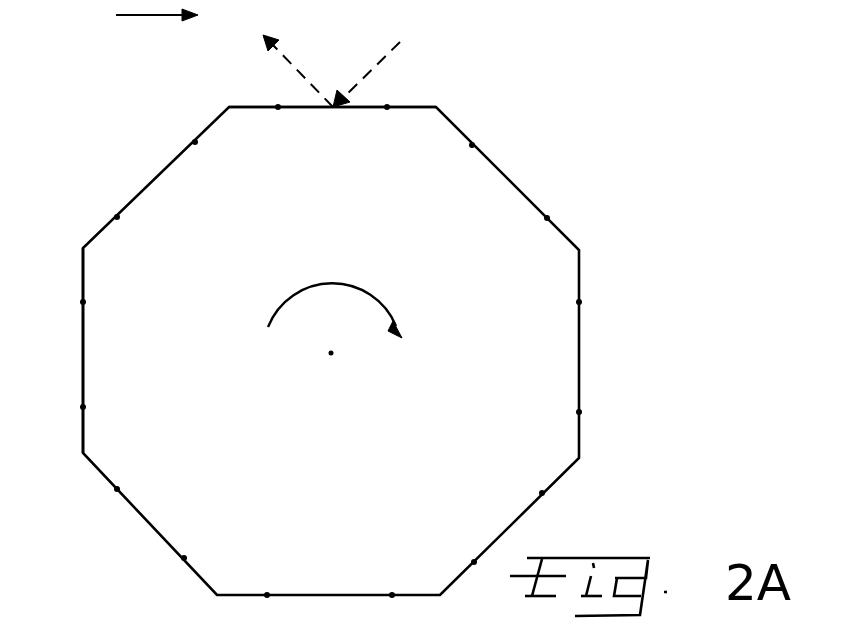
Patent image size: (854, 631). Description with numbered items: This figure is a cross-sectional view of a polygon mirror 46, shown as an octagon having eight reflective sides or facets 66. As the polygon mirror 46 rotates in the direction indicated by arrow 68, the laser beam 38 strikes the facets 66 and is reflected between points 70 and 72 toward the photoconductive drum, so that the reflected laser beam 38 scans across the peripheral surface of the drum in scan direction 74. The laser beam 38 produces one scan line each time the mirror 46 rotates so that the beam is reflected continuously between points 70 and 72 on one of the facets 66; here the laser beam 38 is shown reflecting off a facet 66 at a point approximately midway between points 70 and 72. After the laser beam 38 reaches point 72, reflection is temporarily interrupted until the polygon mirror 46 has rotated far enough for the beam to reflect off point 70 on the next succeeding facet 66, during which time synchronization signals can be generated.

The polygon mirror 46 is at (354, 463).
The facets 66 is at (488, 164).
The point 70 is at (387, 109).
The point 72 is at (278, 109).
The arrow 68 is at (338, 283).
The laser beam 38 is at (370, 70).
The scan direction 74 is at (157, 18).